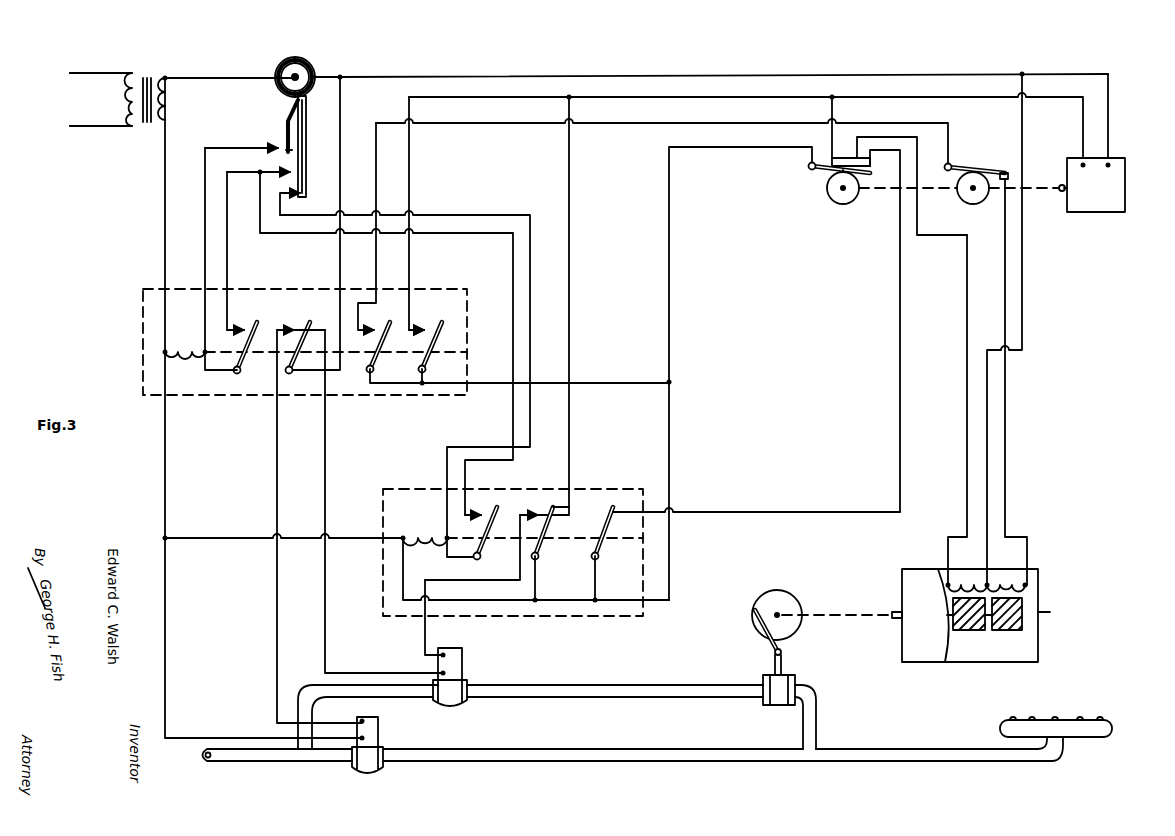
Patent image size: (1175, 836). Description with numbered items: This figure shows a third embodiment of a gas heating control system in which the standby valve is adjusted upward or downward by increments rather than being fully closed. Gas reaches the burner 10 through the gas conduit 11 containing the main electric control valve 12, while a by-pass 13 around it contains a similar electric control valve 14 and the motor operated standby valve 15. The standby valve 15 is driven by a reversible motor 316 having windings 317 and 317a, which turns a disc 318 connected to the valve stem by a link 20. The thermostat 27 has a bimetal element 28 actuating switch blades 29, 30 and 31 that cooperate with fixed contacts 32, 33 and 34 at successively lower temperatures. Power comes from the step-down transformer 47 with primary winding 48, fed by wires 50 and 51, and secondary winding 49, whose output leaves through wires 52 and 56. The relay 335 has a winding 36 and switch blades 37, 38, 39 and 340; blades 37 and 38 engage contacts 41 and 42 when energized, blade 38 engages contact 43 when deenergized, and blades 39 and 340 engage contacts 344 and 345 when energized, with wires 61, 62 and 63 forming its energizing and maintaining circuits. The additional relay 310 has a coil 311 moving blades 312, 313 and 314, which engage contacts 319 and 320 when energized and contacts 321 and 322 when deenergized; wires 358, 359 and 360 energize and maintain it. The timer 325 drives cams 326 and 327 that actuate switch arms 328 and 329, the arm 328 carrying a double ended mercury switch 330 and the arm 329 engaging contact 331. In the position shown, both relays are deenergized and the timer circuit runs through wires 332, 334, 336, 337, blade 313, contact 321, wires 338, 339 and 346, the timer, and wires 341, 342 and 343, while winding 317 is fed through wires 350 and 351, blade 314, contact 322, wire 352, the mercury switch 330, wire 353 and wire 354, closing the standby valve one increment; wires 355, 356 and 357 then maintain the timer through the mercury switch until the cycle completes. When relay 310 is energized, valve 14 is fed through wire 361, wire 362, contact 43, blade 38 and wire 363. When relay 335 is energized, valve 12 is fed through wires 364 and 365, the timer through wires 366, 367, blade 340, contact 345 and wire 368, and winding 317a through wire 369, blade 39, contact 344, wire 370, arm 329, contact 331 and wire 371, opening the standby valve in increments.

The gas burner 10 is at (1050, 722).
The gas conduit 11 is at (556, 760).
The electric control valve 12 is at (382, 729).
The by-pass 13 is at (608, 684).
The electric control valve 14 is at (466, 662).
The standby valve 15 is at (796, 672).
The link 20 is at (796, 628).
The thermostat 27 is at (316, 58).
The bimetal element 28 is at (312, 66).
The switch blade 29 is at (306, 150).
The switch blade 30 is at (286, 160).
The switch blade 31 is at (282, 132).
The fixed electrical contact 32 is at (298, 194).
The fixed electrical contact 33 is at (290, 172).
The fixed electrical contact 34 is at (256, 146).
The winding 36 is at (184, 346).
The switch blade 37 is at (244, 370).
The switch blade 38 is at (296, 352).
The switch blade 39 is at (378, 360).
The fixed electrical contact 41 is at (246, 328).
The fixed electrical contact 42 is at (292, 328).
The fixed electrical contact 43 is at (312, 324).
The step-down transformer 47 is at (122, 52).
The primary winding 48 is at (126, 100).
The secondary winding 49 is at (168, 97).
The wire 50 is at (88, 72).
The wire 51 is at (86, 124).
The wire 52 is at (205, 78).
The wire 56 is at (165, 250).
The wire 61 is at (205, 226).
The wire 62 is at (227, 256).
The wire 63 is at (210, 372).
The relay 310 is at (380, 598).
The coil 311 is at (412, 532).
The switch blade 312 is at (486, 552).
The switch blade 313 is at (543, 542).
The switch blade 314 is at (602, 542).
The reversible motor 316 is at (1040, 612).
The winding 317 is at (966, 578).
The winding 317a is at (1006, 578).
The disc 318 is at (773, 590).
The fixed electrical contact 319 is at (481, 510).
The fixed electrical contact 320 is at (536, 510).
The fixed electrical contact 321 is at (557, 508).
The fixed electrical contact 322 is at (618, 508).
The timer 325 is at (1128, 200).
The cam 326 is at (838, 204).
The cam 327 is at (972, 204).
The switch arm 328 is at (808, 174).
The switch arm 329 is at (962, 166).
The mercury switch 330 is at (848, 150).
The fixed electrical contact 331 is at (1010, 174).
The wire 332 is at (165, 480).
The wire 334 is at (230, 540).
The relay 335 is at (140, 355).
The wire 336 is at (480, 602).
The wire 337 is at (536, 580).
The wire 338 is at (569, 320).
The wire 339 is at (716, 97).
The switch blade 340 is at (432, 342).
The wire 341 is at (1108, 118).
The wire 342 is at (660, 76).
The wire 343 is at (335, 77).
The contact 344 is at (372, 328).
The contact 345 is at (424, 328).
The wire 346 is at (918, 97).
The wire 350 is at (578, 602).
The wire 351 is at (596, 580).
The wire 352 is at (900, 380).
The wire 353 is at (967, 340).
The wire 354 is at (1022, 326).
The wire 355 is at (669, 410).
The wire 356 is at (669, 236).
The wire 357 is at (832, 136).
The wire 358 is at (513, 270).
The wire 359 is at (530, 276).
The wire 360 is at (447, 560).
The wire 361 is at (458, 580).
The wire 362 is at (325, 480).
The wire 363 is at (340, 266).
The wire 364 is at (165, 660).
The wire 365 is at (277, 633).
The wire 366 is at (594, 384).
The wire 367 is at (426, 382).
The wire 368 is at (409, 188).
The wire 369 is at (400, 395).
The wire 370 is at (504, 123).
The wire 371 is at (1005, 396).